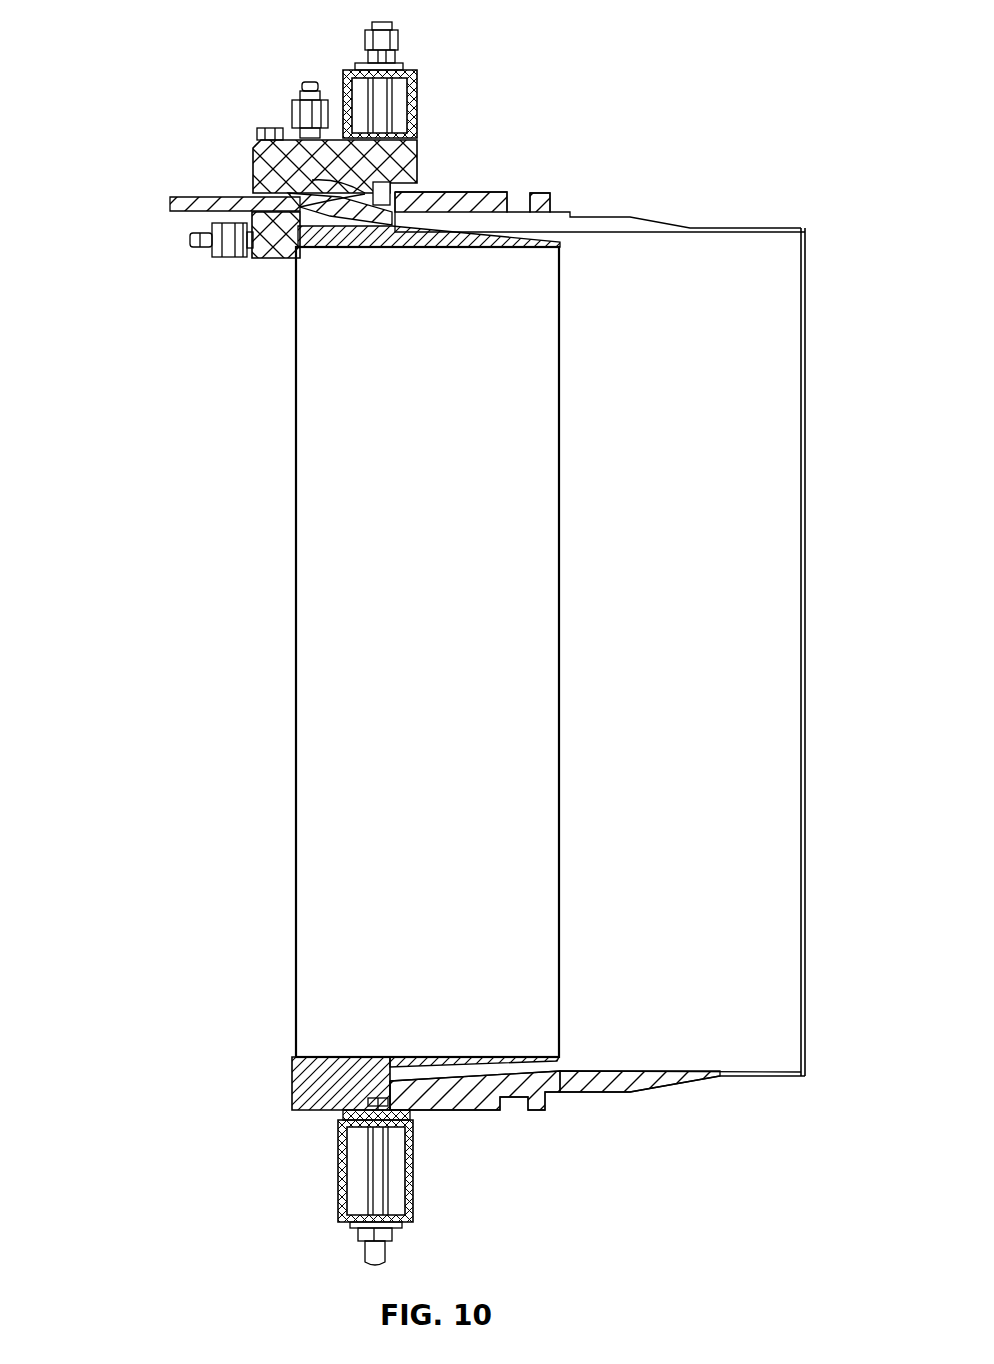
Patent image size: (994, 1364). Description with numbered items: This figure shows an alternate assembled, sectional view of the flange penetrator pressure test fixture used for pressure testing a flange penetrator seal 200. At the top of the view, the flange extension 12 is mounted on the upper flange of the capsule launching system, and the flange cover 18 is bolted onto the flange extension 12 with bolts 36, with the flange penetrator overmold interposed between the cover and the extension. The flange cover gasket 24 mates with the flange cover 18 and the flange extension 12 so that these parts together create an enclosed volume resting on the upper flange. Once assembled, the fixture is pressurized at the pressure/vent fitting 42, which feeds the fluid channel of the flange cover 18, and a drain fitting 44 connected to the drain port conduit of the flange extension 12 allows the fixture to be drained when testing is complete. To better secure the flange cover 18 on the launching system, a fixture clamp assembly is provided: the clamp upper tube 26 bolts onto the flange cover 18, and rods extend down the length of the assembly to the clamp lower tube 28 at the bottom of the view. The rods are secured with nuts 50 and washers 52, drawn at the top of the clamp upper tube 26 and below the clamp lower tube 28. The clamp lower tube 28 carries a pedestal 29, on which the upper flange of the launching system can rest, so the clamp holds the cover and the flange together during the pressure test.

The flange extension 12 is at (265, 257).
The flange cover 18 is at (253, 155).
The flange cover gasket 24 is at (257, 183).
The clamp upper tube 26 is at (418, 110).
The clamp lower tube 28 is at (413, 1200).
The pedestal 29 is at (410, 1113).
The bolts 36 is at (257, 130).
The pressure/vent fitting 42 is at (307, 82).
The drain fitting 44 is at (188, 242).
The nuts 50 is at (398, 35).
The washers 52 is at (404, 62).
The flange penetrator seal 200 is at (170, 205).